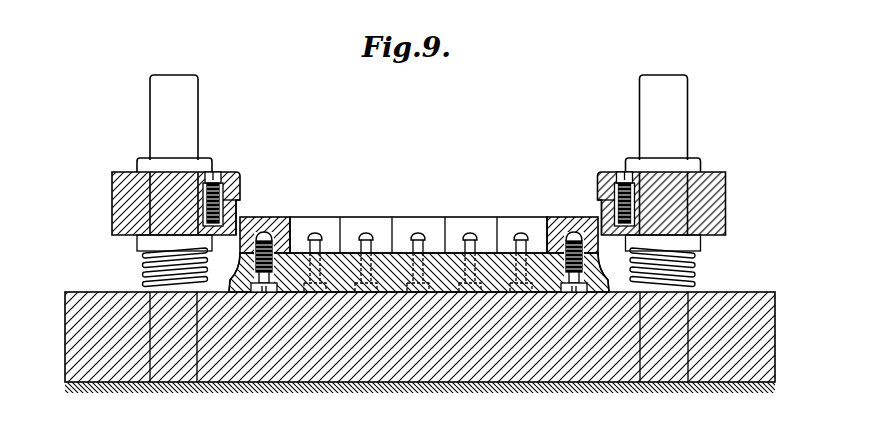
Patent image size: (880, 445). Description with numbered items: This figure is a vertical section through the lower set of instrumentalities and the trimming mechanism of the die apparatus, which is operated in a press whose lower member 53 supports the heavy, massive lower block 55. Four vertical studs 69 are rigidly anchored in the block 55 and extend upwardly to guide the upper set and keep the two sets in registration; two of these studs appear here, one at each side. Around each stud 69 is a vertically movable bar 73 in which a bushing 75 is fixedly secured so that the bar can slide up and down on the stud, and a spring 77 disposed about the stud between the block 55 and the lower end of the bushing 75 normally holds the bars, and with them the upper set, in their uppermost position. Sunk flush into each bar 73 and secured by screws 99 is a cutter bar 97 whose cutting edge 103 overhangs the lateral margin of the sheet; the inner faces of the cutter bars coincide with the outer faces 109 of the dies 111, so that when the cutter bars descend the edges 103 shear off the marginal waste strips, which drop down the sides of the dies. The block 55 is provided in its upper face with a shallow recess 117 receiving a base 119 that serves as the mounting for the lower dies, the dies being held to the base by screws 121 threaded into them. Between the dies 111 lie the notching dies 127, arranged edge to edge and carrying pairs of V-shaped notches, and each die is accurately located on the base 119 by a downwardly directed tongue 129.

The lower member of press 53 is at (527, 383).
The lower block 55 is at (775, 334).
The vertical stud 69 is at (160, 113).
The vertically movable bar 73 is at (113, 201).
The bushing 75 is at (140, 166).
The spring 77 is at (145, 268).
The cutter bar 97 is at (239, 187).
The screw 99 is at (214, 172).
The cutting edge 103 is at (240, 206).
The outer face of die 109 is at (238, 243).
The die 111 is at (273, 225).
The shallow recess 117 is at (549, 297).
The base 119 is at (232, 296).
The screw 121 is at (268, 291).
The notching die 127 is at (406, 226).
The tongue 129 is at (291, 250).